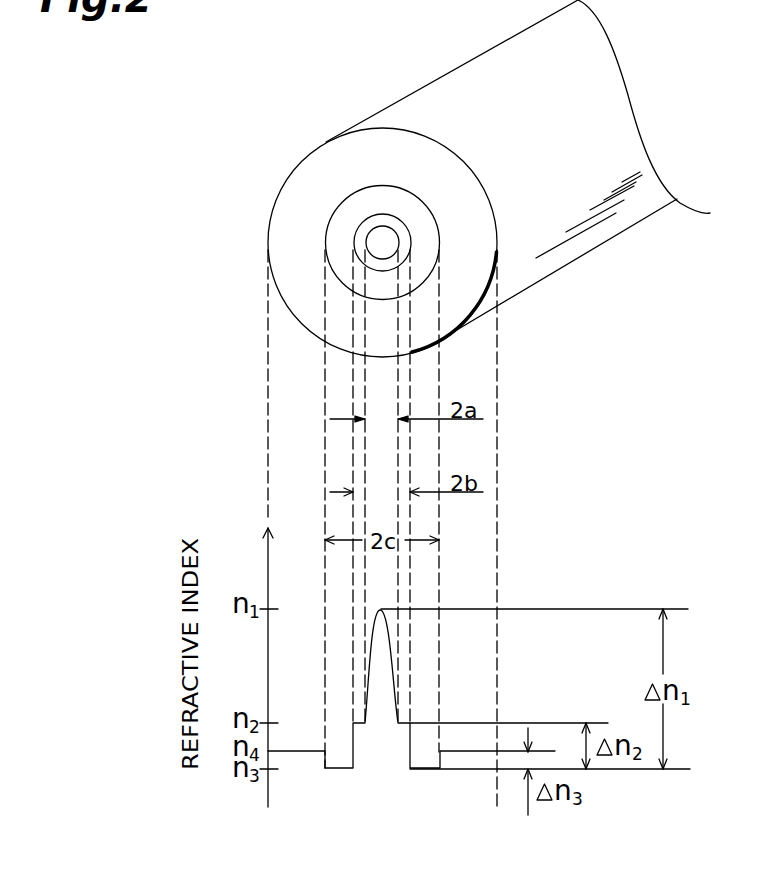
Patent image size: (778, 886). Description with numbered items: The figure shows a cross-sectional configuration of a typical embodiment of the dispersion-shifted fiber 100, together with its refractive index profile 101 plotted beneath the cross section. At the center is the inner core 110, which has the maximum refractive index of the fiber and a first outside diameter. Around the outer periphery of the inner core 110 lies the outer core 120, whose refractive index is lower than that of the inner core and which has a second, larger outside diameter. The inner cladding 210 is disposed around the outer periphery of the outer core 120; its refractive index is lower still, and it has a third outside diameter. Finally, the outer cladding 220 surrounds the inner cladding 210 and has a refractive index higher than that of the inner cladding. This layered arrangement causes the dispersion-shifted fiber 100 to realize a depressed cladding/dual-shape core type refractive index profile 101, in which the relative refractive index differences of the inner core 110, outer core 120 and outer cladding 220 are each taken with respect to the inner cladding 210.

The dispersion-shifted fiber 100 is at (632, 207).
The inner core 110 is at (377, 247).
The outer core 120 is at (365, 227).
The inner cladding 210 is at (422, 258).
The outer cladding 220 is at (468, 290).
The refractive index profile 101 is at (305, 752).